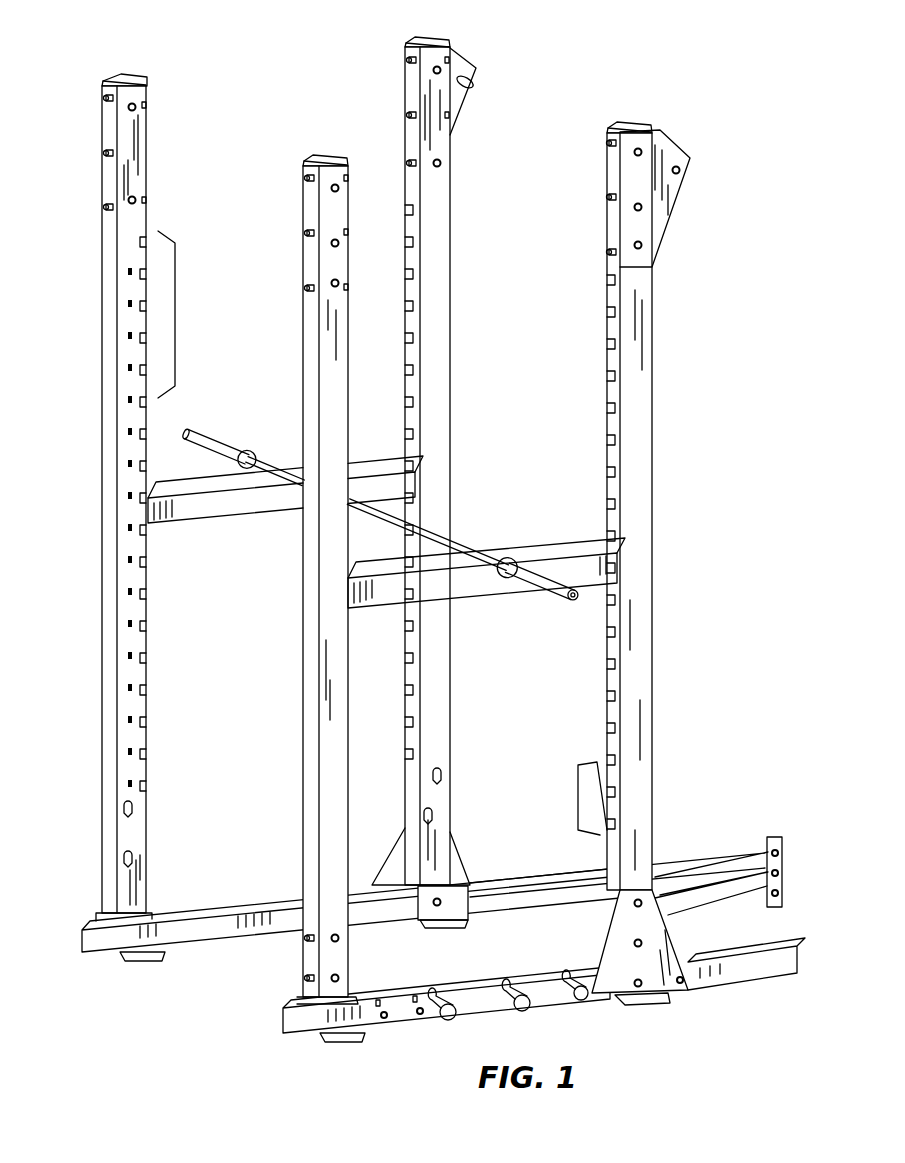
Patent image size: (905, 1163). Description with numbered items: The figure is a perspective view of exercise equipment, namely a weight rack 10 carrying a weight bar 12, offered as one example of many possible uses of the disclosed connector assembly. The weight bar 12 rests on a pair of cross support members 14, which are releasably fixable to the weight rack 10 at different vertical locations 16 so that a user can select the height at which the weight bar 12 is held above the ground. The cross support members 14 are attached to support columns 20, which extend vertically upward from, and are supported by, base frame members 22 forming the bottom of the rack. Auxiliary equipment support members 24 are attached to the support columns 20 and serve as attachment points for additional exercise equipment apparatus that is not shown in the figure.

The weight rack 10 is at (744, 255).
The weight bar 12 is at (458, 547).
The cross support members 14 is at (200, 513).
The vertical locations 16 is at (176, 322).
The support columns 20 is at (103, 502).
The base frame members 22 is at (190, 935).
The auxiliary equipment support members 24 is at (461, 69).